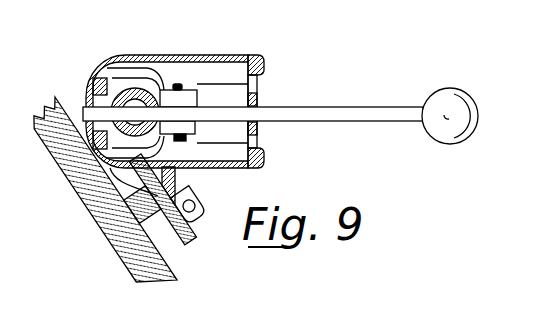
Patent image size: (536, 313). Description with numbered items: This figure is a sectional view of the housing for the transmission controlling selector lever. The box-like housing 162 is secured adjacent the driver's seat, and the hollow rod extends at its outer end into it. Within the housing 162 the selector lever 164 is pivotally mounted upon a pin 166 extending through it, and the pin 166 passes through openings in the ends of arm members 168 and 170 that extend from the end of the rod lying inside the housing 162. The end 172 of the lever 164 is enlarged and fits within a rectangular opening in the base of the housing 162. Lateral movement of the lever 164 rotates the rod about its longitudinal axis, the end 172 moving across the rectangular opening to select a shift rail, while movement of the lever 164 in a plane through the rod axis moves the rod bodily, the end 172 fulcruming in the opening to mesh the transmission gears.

The housing 162 is at (210, 55).
The selector lever 164 is at (280, 105).
The pin 166 is at (178, 84).
The arm member 168 is at (168, 95).
The arm member 170 is at (197, 127).
The end of the lever member 172 is at (87, 110).